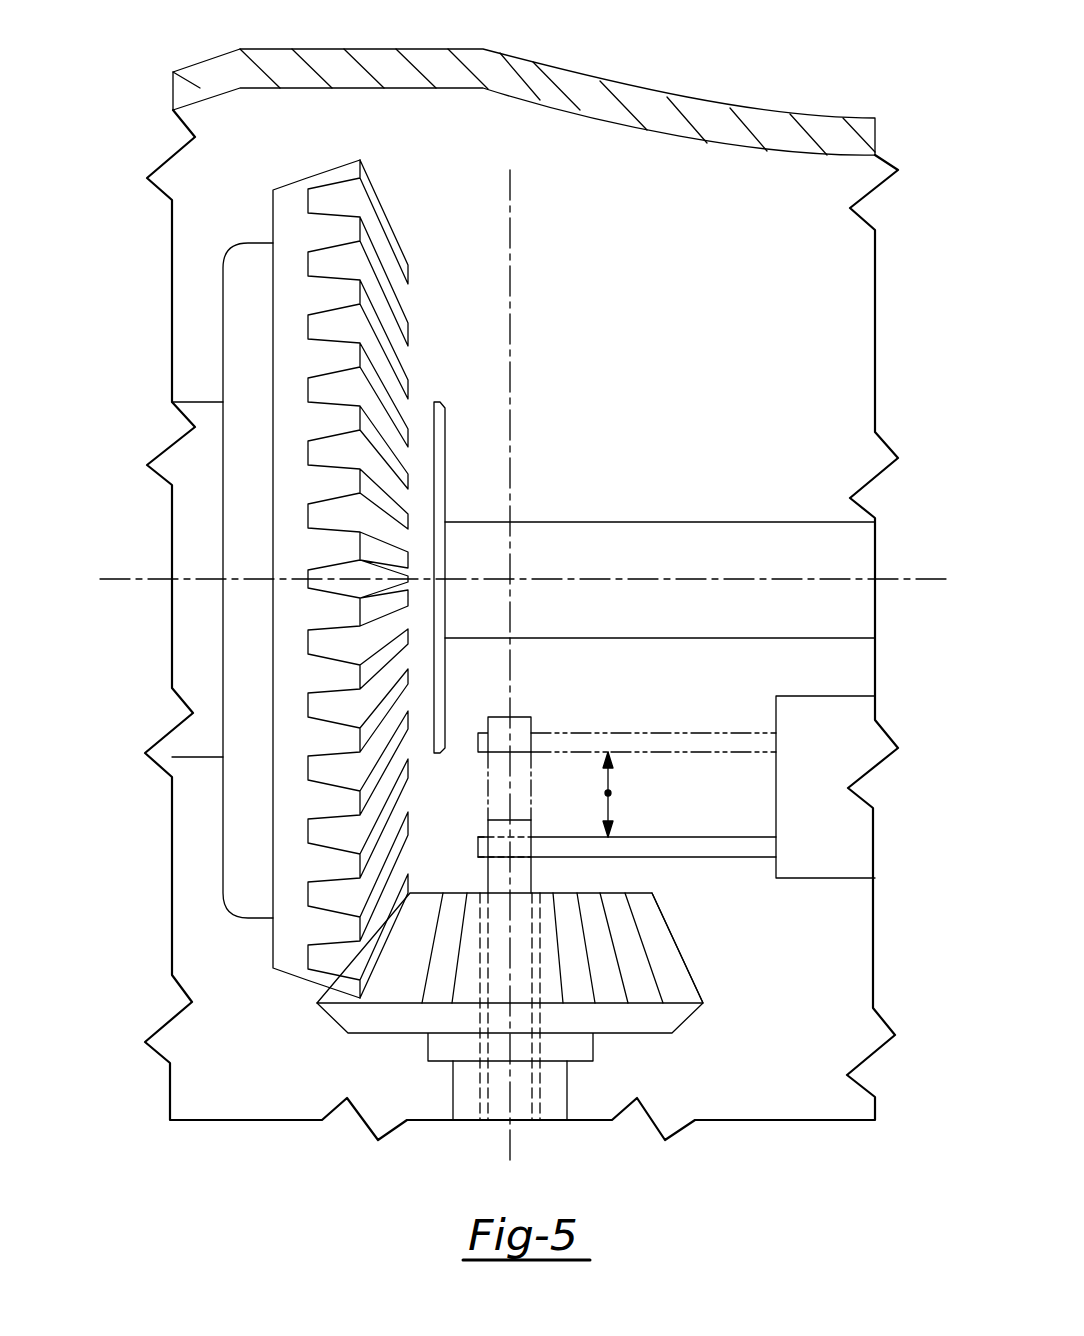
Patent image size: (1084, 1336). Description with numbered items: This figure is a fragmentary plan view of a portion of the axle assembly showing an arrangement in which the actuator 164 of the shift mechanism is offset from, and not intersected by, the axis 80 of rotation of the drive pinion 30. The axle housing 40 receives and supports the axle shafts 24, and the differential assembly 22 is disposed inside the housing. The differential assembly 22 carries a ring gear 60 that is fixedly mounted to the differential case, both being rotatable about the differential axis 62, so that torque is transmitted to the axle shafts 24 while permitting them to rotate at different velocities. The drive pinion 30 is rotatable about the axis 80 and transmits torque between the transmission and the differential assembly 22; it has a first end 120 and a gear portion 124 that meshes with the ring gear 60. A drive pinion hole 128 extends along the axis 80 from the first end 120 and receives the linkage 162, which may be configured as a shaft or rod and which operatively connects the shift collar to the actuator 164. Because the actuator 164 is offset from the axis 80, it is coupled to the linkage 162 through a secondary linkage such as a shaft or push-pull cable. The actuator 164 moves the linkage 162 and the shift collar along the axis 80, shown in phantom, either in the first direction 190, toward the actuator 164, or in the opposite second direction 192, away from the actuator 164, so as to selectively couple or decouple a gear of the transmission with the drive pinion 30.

The axle housing 40 is at (582, 68).
The differential assembly 22 is at (207, 416).
The differential axis 62 is at (137, 579).
The axis 80 is at (512, 357).
The ring gear 60 is at (353, 173).
The axle shafts 24 is at (678, 565).
The actuator 164 is at (840, 810).
The linkage 162 is at (486, 877).
The first direction 190 is at (653, 726).
The second direction 192 is at (653, 864).
The first end 120 is at (638, 893).
The drive pinion 30 is at (566, 977).
The gear portion 124 is at (681, 952).
The drive pinion hole 128 is at (540, 1087).